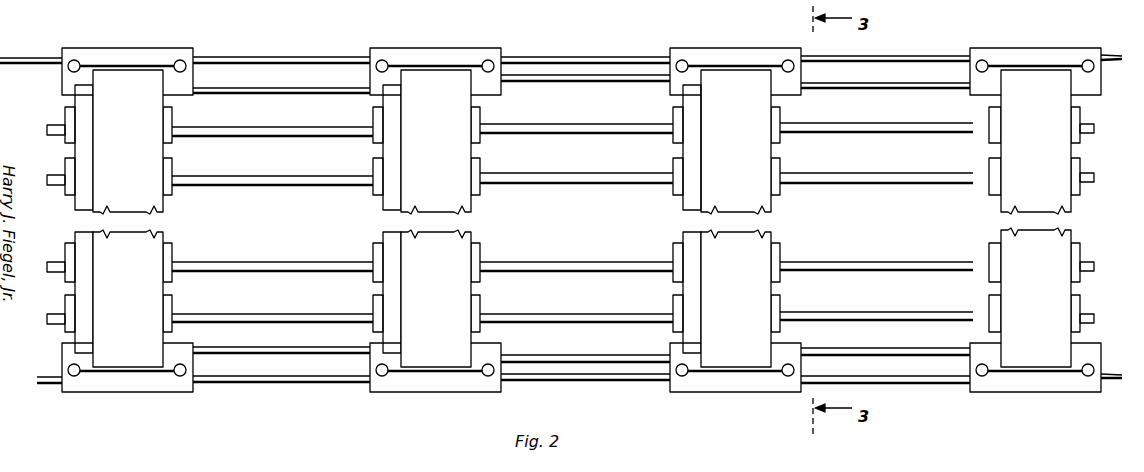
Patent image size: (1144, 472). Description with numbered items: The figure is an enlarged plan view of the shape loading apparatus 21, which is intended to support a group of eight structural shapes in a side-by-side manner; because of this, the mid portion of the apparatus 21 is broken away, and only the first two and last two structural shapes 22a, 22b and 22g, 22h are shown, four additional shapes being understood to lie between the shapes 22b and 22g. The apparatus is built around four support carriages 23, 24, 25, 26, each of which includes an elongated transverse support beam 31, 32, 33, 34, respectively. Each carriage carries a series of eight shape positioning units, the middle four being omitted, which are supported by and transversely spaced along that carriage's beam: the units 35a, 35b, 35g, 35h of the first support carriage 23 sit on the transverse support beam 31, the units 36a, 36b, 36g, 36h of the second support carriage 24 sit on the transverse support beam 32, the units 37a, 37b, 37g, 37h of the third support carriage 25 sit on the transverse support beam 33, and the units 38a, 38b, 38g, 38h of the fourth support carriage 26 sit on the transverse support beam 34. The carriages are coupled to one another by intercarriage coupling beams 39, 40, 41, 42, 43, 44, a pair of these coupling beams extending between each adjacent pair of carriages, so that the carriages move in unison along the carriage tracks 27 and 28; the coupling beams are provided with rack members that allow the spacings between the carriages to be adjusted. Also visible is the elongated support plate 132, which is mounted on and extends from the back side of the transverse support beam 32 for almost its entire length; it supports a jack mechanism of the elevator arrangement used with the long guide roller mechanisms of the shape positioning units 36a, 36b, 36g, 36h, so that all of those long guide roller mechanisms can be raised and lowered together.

The shape loading apparatus 21 is at (552, 228).
The structural shape 22a is at (913, 135).
The structural shape 22b is at (906, 186).
The structural shape 22g is at (905, 257).
The structural shape 22h is at (895, 311).
The first support carriage 23 is at (1033, 45).
The second support carriage 24 is at (736, 46).
The third support carriage 25 is at (438, 46).
The fourth support carriage 26 is at (125, 46).
The carriage track 27 is at (268, 377).
The carriage track 28 is at (220, 57).
The transverse support beam 31 is at (1033, 340).
The transverse support beam 32 is at (733, 345).
The transverse support beam 33 is at (440, 338).
The transverse support beam 34 is at (133, 345).
The shape positioning unit 35a is at (1081, 115).
The shape positioning unit 35b is at (1081, 165).
The shape positioning unit 35g is at (1081, 250).
The shape positioning unit 35h is at (1081, 302).
The shape positioning unit 36a is at (781, 116).
The shape positioning unit 36b is at (781, 166).
The shape positioning unit 36g is at (781, 250).
The shape positioning unit 36h is at (781, 302).
The shape positioning unit 37a is at (482, 116).
The shape positioning unit 37b is at (482, 166).
The shape positioning unit 37g is at (482, 250).
The shape positioning unit 37h is at (482, 303).
The shape positioning unit 38a is at (174, 116).
The shape positioning unit 38b is at (174, 166).
The shape positioning unit 38g is at (174, 250).
The shape positioning unit 38h is at (174, 303).
The intercarriage coupling beam 39 is at (840, 354).
The intercarriage coupling beam 40 is at (915, 83).
The intercarriage coupling beam 41 is at (578, 353).
The intercarriage coupling beam 42 is at (585, 74).
The intercarriage coupling beam 43 is at (235, 352).
The intercarriage coupling beam 44 is at (262, 87).
The support plate 132 is at (690, 150).